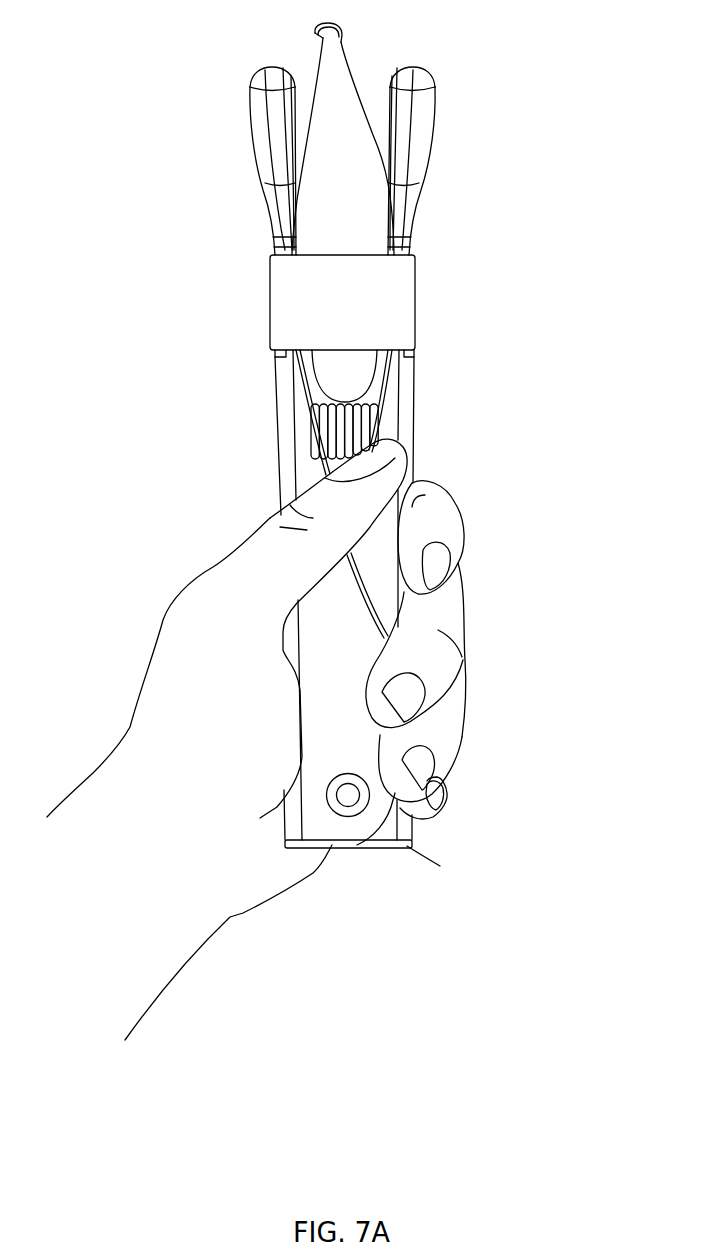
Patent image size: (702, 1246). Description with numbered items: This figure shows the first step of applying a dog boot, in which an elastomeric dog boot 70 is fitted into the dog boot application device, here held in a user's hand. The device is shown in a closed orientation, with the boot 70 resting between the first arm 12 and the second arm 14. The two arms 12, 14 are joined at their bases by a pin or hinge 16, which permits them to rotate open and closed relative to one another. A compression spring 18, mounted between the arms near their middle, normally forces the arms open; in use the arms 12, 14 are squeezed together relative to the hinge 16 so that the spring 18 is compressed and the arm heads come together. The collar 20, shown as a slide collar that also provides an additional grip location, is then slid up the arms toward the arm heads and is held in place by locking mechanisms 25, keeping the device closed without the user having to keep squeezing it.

The elastomeric dog boot 70 is at (340, 85).
The second arm 14 is at (403, 218).
The collar 20 is at (333, 300).
The locking mechanisms 25 is at (274, 355).
The first arm 12 is at (285, 412).
The compression spring 18 is at (363, 420).
The pin or hinge 16 is at (350, 797).